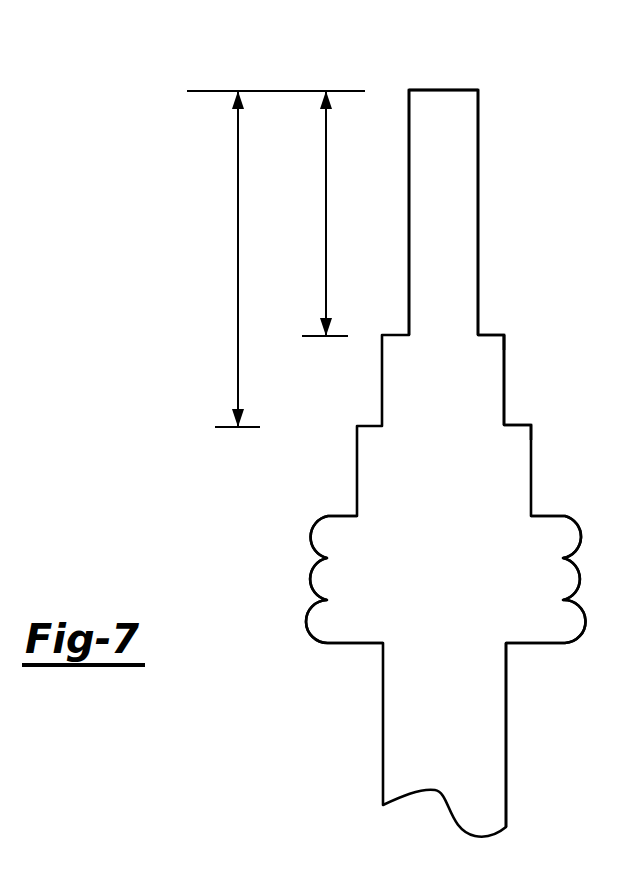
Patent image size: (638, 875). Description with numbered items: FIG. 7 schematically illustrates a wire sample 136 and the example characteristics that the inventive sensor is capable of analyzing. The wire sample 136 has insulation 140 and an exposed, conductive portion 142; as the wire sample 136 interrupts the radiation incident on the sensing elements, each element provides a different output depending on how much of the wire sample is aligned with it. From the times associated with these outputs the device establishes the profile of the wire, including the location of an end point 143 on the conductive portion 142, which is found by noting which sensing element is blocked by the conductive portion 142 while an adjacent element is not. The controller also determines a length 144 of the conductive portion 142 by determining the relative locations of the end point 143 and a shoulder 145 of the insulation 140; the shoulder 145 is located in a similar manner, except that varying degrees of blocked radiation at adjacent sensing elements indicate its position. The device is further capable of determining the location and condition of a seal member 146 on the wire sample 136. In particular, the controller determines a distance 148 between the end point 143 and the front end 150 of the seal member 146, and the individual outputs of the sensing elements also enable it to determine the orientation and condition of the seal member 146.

The wire sample 136 is at (378, 744).
The insulation 140 is at (504, 362).
The conductive portion 142 is at (478, 120).
The end point 143 is at (463, 86).
The length 144 is at (326, 267).
The shoulder 145 is at (499, 330).
The seal member 146 is at (370, 502).
The distance 148 is at (238, 335).
The front end 150 is at (531, 425).